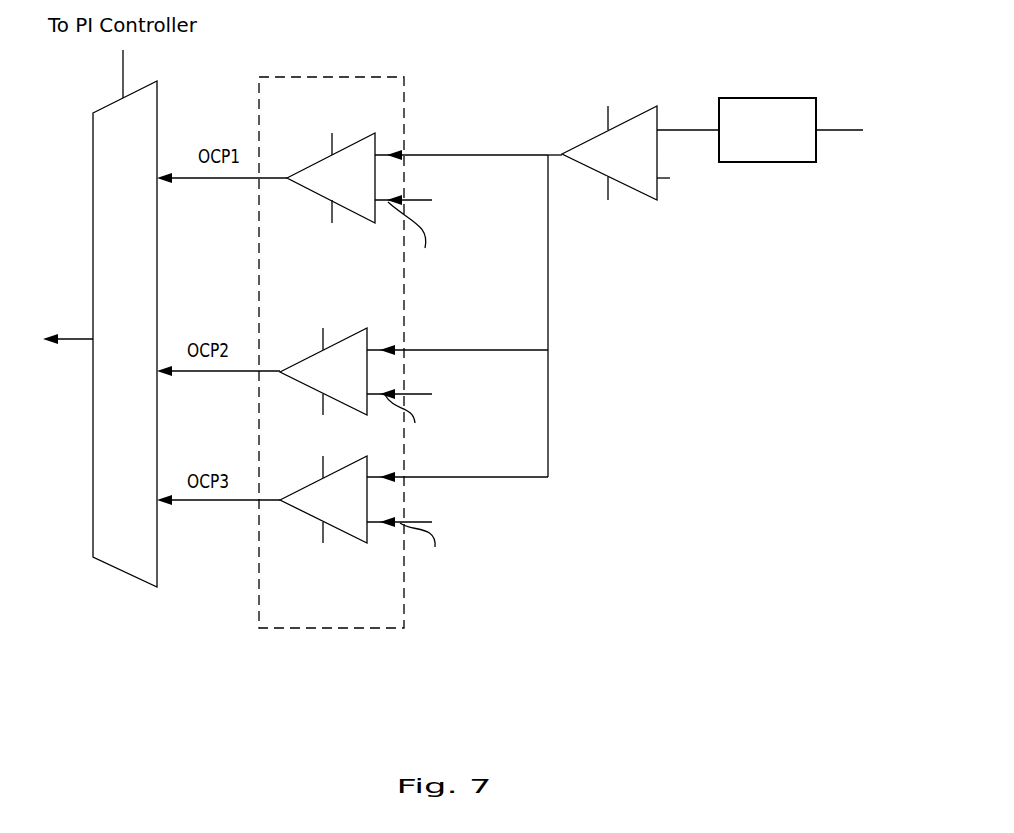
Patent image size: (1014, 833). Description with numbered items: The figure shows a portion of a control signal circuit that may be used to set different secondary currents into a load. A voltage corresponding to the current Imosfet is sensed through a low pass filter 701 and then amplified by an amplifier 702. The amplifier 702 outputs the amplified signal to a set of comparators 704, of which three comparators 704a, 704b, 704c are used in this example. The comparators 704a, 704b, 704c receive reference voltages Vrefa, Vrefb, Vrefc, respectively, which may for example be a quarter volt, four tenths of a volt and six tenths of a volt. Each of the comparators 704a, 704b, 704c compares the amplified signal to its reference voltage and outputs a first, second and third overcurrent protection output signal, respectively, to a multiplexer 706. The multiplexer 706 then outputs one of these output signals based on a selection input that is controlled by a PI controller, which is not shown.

The low pass filter 701 is at (773, 163).
The amplifier 702 is at (647, 200).
The comparators 704 is at (327, 630).
The comparator 704a is at (375, 133).
The comparator 704b is at (312, 355).
The comparator 704c is at (303, 512).
The multiplexer 706 is at (140, 358).